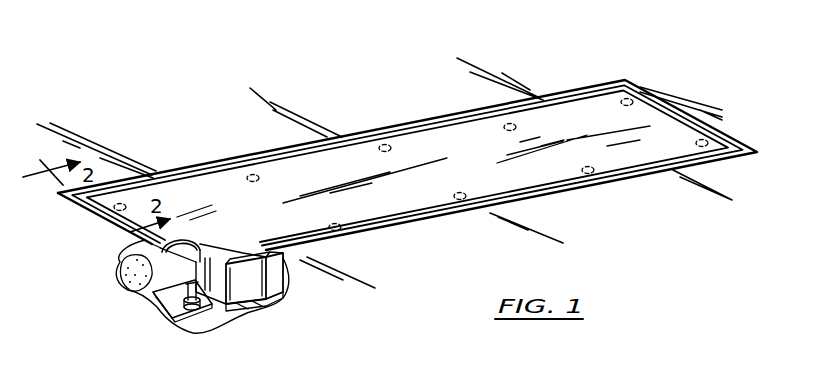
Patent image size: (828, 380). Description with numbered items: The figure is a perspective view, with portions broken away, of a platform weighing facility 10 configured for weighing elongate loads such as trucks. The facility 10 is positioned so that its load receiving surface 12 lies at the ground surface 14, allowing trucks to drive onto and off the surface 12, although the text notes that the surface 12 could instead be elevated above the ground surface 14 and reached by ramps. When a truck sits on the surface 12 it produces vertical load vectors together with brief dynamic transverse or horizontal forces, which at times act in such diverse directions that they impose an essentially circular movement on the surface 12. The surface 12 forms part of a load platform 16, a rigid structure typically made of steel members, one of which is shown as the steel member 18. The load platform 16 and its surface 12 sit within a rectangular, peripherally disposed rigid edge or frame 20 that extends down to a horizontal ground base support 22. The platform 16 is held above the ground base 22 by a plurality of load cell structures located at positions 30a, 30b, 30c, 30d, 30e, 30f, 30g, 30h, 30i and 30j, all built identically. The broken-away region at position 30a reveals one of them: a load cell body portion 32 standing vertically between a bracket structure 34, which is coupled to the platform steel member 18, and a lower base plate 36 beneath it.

The platform weighing facility 10 is at (602, 64).
The load receiving surface 12 is at (466, 140).
The ground surface 14 is at (424, 90).
The load platform 16 is at (256, 311).
The steel member 18 is at (278, 279).
The rigid edge or frame 20 is at (562, 197).
The ground base support 22 is at (279, 303).
The load cell structure 30a is at (212, 239).
The load cell structure 30b is at (341, 229).
The load cell structure 30c is at (460, 200).
The load cell structure 30d is at (592, 174).
The load cell structure 30e is at (707, 141).
The load cell structure 30f is at (632, 99).
The load cell structure 30g is at (512, 123).
The load cell structure 30h is at (385, 144).
The load cell structure 30i is at (253, 174).
The load cell structure 30j is at (121, 203).
The load cell body portion 32 is at (173, 297).
The bracket structure 34 is at (220, 283).
The lower base plate 36 is at (207, 294).